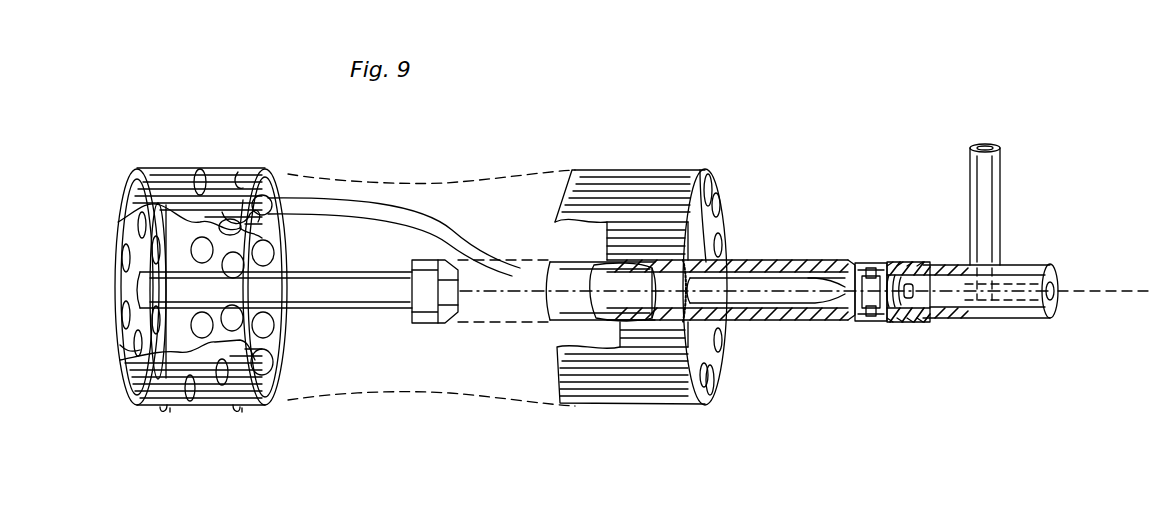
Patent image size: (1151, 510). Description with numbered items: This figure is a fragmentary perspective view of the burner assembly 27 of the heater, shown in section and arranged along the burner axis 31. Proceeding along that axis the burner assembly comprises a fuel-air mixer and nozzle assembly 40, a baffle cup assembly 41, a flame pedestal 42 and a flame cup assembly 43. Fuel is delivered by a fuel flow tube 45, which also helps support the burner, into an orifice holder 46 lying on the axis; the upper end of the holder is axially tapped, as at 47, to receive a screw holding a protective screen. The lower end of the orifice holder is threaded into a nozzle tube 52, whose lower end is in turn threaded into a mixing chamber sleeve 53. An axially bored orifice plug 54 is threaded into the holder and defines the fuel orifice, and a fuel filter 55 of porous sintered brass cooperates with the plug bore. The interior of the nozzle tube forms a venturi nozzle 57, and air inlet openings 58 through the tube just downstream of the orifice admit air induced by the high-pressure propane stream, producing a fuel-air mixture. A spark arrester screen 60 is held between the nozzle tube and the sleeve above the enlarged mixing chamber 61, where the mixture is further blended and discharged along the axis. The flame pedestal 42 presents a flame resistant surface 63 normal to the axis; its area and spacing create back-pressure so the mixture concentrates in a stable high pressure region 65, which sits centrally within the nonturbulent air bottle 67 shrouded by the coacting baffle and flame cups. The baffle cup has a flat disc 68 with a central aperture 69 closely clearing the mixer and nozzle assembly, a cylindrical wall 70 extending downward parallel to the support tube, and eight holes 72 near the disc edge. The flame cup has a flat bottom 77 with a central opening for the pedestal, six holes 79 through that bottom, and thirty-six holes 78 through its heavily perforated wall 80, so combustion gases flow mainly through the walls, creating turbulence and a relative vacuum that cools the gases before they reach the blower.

The steam cleaning assembly 27 is at (676, 95).
The axis 31 is at (1120, 290).
The fuel-air mixer and nozzle assembly 40 is at (822, 260).
The baffle cup assembly 41 is at (703, 168).
The flame pedestal 42 is at (348, 313).
The flame cup assembly 43 is at (171, 316).
The fuel flow tube 45 is at (1003, 188).
The orifice holder 46 is at (965, 322).
The axial tap 47 is at (1058, 318).
The nozzle tube 52 is at (838, 322).
The mixing chamber sleeve 53 is at (668, 268).
The orifice plug 54 is at (900, 270).
The fuel filter 55 is at (908, 300).
The venturi nozzle 57 is at (810, 322).
The air inlet openings 58 is at (870, 270).
The spark arrester screen 60 is at (660, 330).
The mixing chamber 61 is at (633, 300).
The flame resistant surface 63 is at (438, 325).
The high pressure region 65 is at (522, 262).
The air bottle 67 is at (432, 180).
The disc 68 is at (715, 375).
The central aperture 69 is at (735, 272).
The cylindrical wall 70 is at (615, 170).
The holes 72 is at (710, 195).
The flat bottom 77 is at (125, 347).
The holes 78 is at (242, 412).
The holes 79 is at (118, 312).
The wall 80 is at (75, 218).